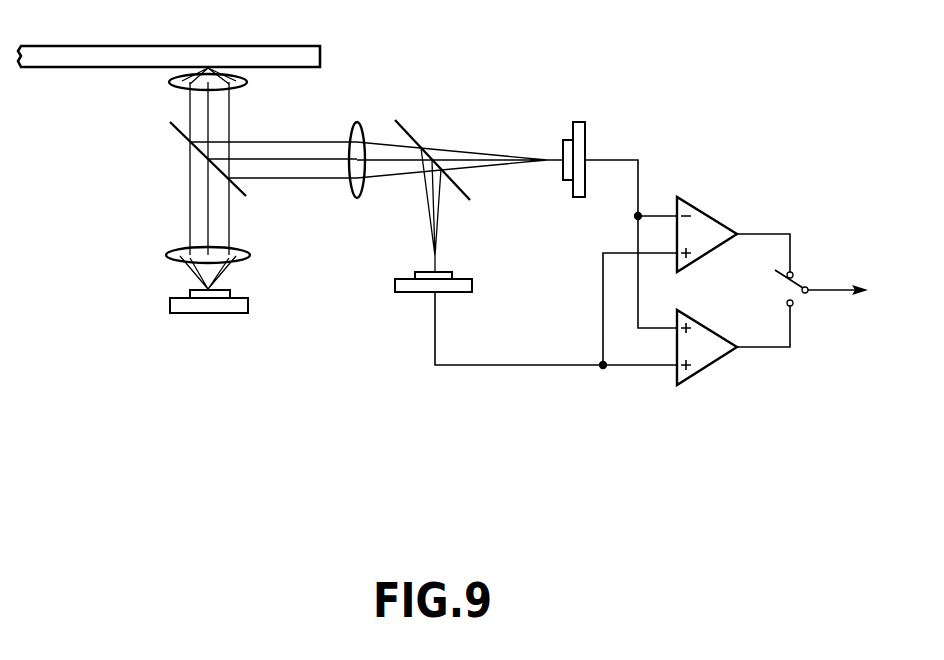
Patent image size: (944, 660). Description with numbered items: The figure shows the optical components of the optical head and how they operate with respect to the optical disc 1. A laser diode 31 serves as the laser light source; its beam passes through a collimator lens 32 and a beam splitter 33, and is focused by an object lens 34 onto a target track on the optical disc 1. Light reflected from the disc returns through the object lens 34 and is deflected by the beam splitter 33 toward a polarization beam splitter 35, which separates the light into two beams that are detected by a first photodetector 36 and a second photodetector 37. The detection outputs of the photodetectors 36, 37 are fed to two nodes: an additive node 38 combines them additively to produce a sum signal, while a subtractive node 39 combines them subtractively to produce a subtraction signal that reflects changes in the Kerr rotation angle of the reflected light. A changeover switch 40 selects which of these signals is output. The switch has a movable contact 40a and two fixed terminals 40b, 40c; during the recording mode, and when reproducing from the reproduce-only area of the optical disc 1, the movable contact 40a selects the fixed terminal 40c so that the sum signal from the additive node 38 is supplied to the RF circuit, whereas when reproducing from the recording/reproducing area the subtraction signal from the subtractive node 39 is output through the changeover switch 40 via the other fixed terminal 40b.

The optical disc 1 is at (66, 57).
The laser diode 31 is at (170, 305).
The collimating lens 32 is at (178, 250).
The beam splitter 33 is at (176, 135).
The object lens 34 is at (183, 89).
The polarization beam splitter 35 is at (407, 128).
The first photodetector 36 is at (586, 130).
The second photodetector 37 is at (395, 288).
The additive node 38 is at (705, 337).
The subtractive node 39 is at (705, 222).
The changeover switch 40 is at (824, 285).
The movable contact 40a is at (808, 285).
The switch contact 40b is at (791, 271).
The fixed terminal 40c is at (792, 307).